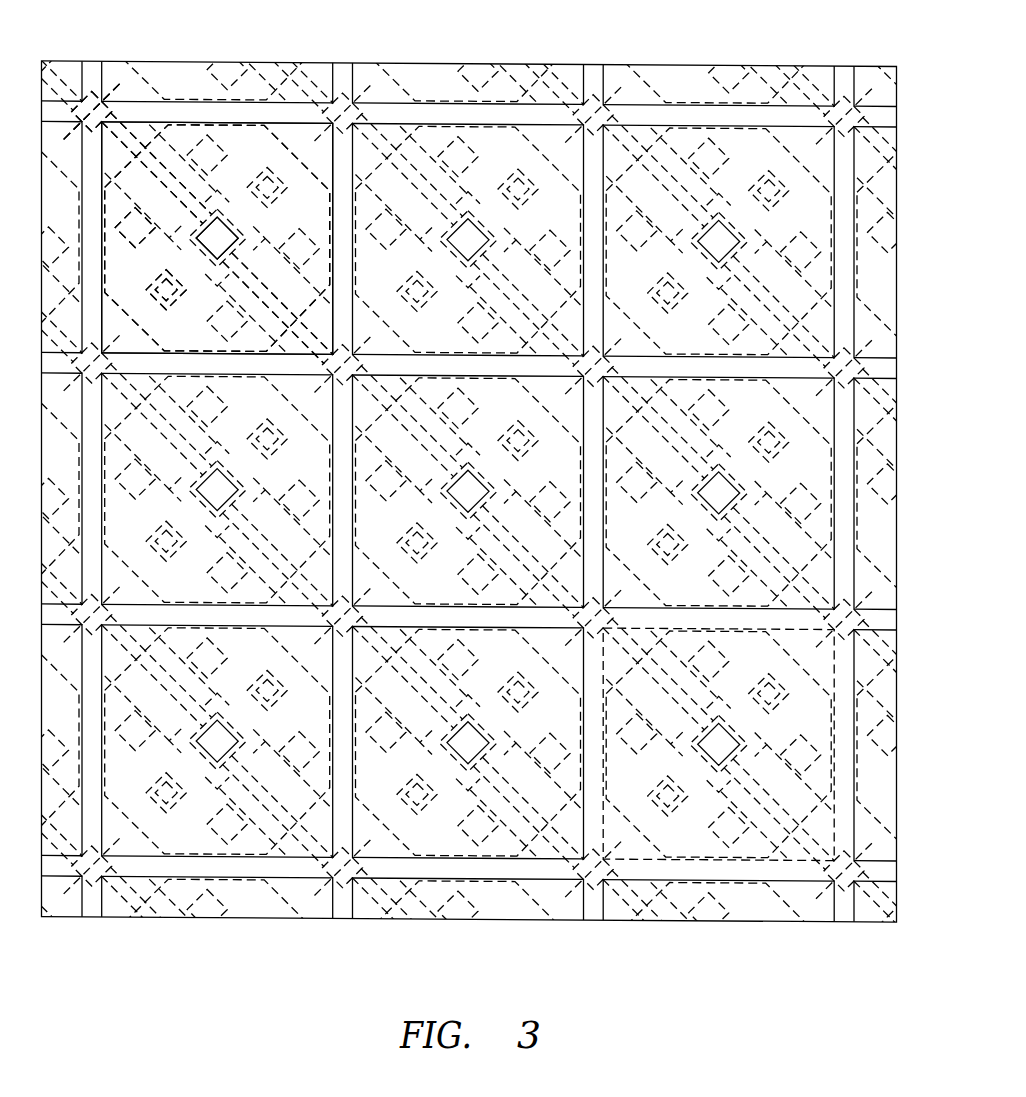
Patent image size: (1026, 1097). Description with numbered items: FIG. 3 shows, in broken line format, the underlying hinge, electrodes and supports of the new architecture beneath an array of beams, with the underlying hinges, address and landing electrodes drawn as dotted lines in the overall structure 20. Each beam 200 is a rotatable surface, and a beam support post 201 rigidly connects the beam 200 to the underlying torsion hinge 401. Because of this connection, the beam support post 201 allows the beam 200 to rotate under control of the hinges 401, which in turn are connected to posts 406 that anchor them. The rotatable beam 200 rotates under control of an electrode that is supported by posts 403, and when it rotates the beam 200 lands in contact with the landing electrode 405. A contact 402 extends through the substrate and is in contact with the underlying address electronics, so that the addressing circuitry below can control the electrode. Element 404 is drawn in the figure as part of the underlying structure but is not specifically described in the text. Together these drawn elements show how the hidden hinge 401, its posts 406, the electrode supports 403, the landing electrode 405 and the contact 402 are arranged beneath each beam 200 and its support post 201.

The deformable mirror device array 20 is at (737, 921).
The beam 200 is at (280, 127).
The beam support post 201 is at (222, 233).
The torsion hinge 401 is at (140, 140).
The contact 402 is at (168, 292).
The posts 403 is at (130, 237).
The hinge yoke outline 404 is at (308, 172).
The landing electrode 405 is at (105, 60).
The posts 406 is at (88, 93).